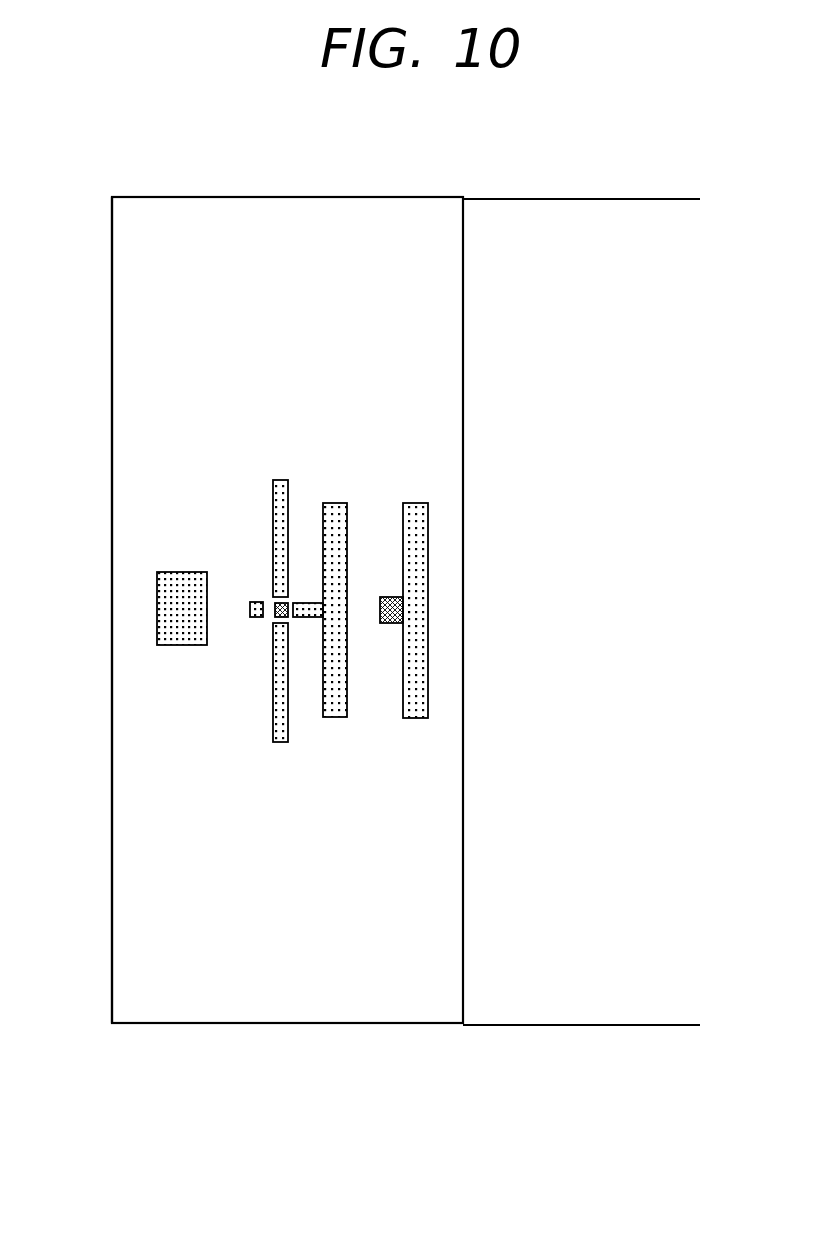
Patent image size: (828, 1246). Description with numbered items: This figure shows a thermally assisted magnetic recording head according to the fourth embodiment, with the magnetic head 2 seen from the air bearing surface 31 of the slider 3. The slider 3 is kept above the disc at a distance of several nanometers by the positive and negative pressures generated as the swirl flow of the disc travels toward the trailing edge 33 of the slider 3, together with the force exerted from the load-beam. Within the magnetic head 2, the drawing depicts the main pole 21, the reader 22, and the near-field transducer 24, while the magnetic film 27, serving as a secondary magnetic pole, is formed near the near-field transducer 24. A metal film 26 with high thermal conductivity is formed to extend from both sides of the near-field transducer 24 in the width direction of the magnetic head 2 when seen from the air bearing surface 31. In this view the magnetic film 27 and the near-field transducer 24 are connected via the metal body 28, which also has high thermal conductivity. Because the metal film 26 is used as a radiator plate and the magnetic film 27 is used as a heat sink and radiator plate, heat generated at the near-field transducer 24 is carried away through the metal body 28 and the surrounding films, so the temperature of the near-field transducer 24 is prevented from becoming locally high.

The magnetic head 2 is at (263, 197).
The slider 3 is at (592, 199).
The main pole 21 is at (256, 602).
The reader 22 is at (390, 623).
The near-field transducer 24 is at (275, 619).
The metal film 26 is at (273, 490).
The magnetic film 27 is at (334, 717).
The metal body 28 is at (310, 617).
The air bearing surface 31 is at (622, 790).
The trailing edge 33 is at (112, 573).